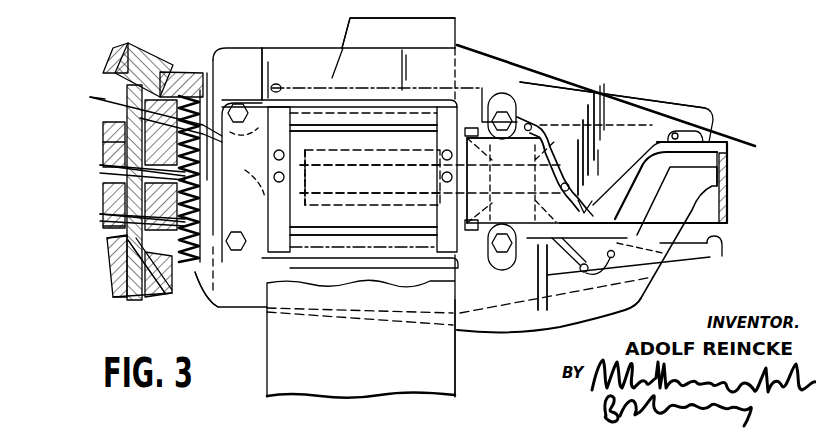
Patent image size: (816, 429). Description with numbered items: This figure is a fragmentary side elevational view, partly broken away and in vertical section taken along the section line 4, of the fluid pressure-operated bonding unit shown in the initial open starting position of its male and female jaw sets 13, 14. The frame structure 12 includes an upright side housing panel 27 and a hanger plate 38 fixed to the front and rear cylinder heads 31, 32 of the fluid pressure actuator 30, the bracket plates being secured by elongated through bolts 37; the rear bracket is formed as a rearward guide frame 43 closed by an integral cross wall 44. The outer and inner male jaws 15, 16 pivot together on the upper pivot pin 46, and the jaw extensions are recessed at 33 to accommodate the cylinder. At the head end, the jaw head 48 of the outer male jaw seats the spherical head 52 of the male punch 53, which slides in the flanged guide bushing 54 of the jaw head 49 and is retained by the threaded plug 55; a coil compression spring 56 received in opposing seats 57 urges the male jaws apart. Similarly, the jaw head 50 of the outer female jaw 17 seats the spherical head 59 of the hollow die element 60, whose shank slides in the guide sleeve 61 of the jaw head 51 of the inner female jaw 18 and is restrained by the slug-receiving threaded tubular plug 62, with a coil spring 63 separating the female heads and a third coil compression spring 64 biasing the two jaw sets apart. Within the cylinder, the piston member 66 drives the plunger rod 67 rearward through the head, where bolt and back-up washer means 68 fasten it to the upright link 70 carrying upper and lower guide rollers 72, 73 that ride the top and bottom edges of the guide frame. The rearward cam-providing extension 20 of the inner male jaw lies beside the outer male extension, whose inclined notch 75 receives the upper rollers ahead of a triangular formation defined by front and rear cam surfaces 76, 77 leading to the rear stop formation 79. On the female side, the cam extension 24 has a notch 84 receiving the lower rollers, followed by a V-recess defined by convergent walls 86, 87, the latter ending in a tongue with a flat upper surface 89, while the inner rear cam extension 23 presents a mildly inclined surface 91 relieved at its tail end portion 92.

The section line 4 is at (92, 58).
The frame structure 12 is at (465, 382).
The male jaw set 13 is at (82, 33).
The female jaw set 14 is at (131, 298).
The outer male jaw 15 is at (90, 97).
The inner male jaw 16 is at (100, 170).
The outer female jaw 17 is at (112, 270).
The inner female jaw 18 is at (100, 215).
The cam-providing extension 20 is at (620, 93).
The rear cam extension 23 is at (688, 263).
The cam extension 24 is at (640, 290).
The side housing panel 27 is at (447, 353).
The fluid pressure actuator 30 is at (415, 213).
The front cylinder head 31 is at (282, 220).
The rear cylinder head 32 is at (447, 257).
The recess 33 is at (304, 99).
The through bolt 37 is at (418, 117).
The hanger plate 38 is at (460, 44).
The guide frame 43 is at (731, 217).
The cross wall 44 is at (731, 207).
The upper pivot pin 46 is at (262, 96).
The jaw head 48 is at (118, 47).
The jaw head 49 is at (104, 136).
The jaw head 50 is at (115, 250).
The jaw head 51 is at (103, 200).
The spherical head 52 is at (187, 62).
The male punch 53 is at (134, 113).
The flanged guide bushing 54 is at (103, 150).
The plug 55 is at (148, 60).
The coil compression spring 56 is at (204, 128).
The seat 57 is at (213, 62).
The spherical head 59 is at (117, 262).
The female punch or die element 60 is at (110, 228).
The guide sleeve 61 is at (200, 193).
The threaded tubular plug 62 is at (157, 288).
The coil spring 63 is at (197, 282).
The third coil compression spring 64 is at (212, 165).
The piston member 66 is at (312, 160).
The plunger rod 67 is at (373, 173).
The bolt and back-up washer means 68 is at (545, 167).
The link 70 is at (507, 264).
The upper guide roller 72 is at (520, 117).
The lower guide roller 73 is at (568, 256).
The notch 75 is at (531, 124).
The front cam surface 76 is at (582, 190).
The rear cam surface 77 is at (652, 198).
The rear stop formation 79 is at (683, 133).
The notch 84 is at (527, 227).
The convergent wall 86 is at (581, 269).
The convergent wall 87 is at (613, 257).
The flat upper surface 89 is at (729, 165).
The rearwardly inclined surface 91 is at (582, 226).
The tail end portion 92 is at (721, 257).